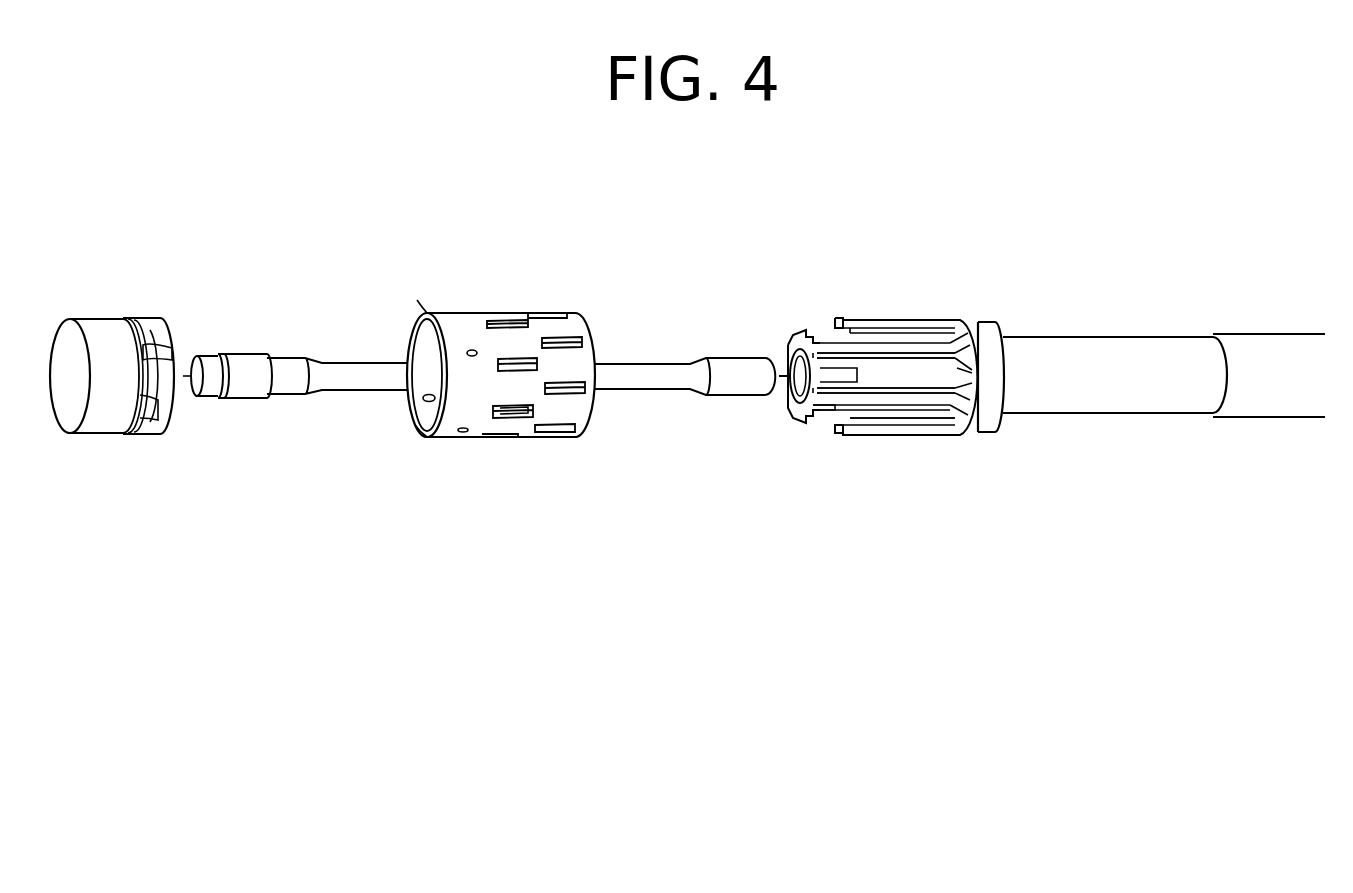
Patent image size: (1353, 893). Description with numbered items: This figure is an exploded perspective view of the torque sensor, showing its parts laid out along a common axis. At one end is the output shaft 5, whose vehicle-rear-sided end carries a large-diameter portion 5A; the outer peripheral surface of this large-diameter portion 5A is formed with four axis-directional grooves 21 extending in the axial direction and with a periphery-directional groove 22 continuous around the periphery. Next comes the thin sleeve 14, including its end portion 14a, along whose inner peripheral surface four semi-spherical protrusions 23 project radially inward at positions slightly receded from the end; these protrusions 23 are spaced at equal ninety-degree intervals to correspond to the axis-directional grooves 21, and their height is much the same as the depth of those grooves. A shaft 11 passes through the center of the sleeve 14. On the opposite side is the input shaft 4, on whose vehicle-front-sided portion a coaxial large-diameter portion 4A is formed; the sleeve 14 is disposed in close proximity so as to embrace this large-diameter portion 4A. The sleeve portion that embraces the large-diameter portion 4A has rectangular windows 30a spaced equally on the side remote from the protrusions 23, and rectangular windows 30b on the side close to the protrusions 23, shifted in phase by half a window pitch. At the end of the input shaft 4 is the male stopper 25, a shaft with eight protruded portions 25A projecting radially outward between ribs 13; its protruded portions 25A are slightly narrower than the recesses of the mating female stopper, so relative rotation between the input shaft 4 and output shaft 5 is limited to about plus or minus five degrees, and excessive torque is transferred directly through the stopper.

The input shaft 4 is at (1088, 390).
The large-diameter portion 4A is at (870, 406).
The output shaft 5 is at (103, 413).
The large-diameter portion 5A is at (152, 328).
The shaft 11 is at (632, 382).
The ribs 13 is at (903, 400).
The sleeve 14 is at (478, 340).
The end portion of sleeve 14a is at (428, 312).
The axis-directional grooves 21 is at (165, 352).
The periphery-directional groove 22 is at (147, 393).
The semi-spherical protrusions 23 is at (412, 432).
The male stopper 25 is at (813, 320).
The protruded portions 25A is at (828, 408).
The rectangular windows 30a is at (585, 387).
The rectangular windows 30b is at (515, 405).